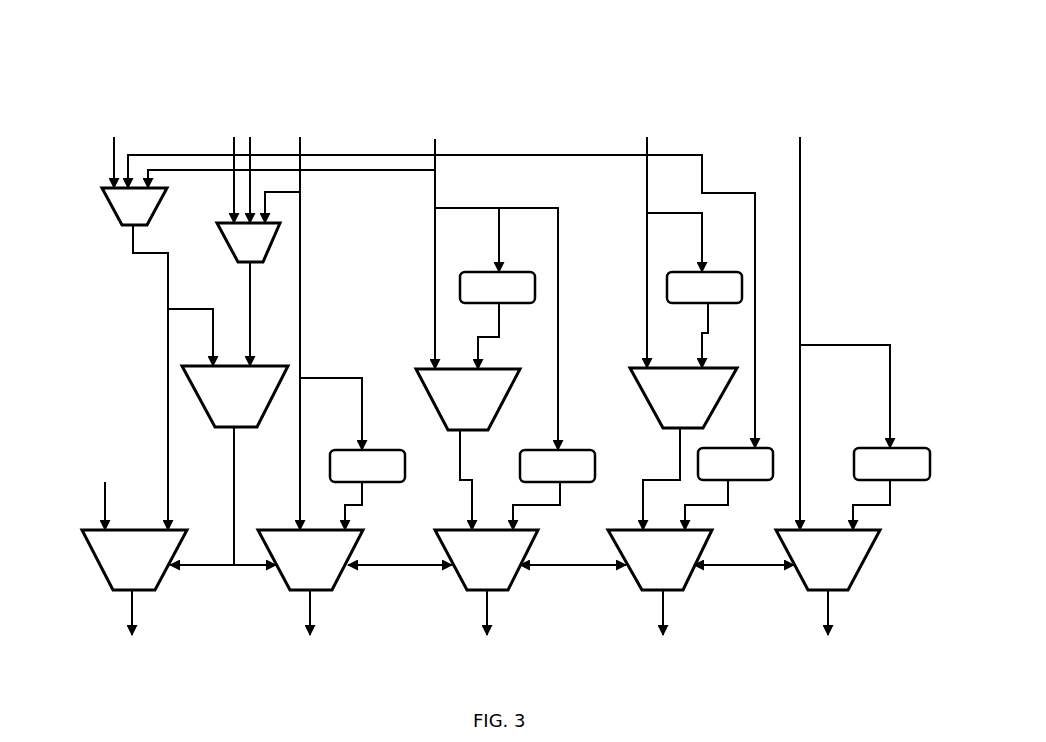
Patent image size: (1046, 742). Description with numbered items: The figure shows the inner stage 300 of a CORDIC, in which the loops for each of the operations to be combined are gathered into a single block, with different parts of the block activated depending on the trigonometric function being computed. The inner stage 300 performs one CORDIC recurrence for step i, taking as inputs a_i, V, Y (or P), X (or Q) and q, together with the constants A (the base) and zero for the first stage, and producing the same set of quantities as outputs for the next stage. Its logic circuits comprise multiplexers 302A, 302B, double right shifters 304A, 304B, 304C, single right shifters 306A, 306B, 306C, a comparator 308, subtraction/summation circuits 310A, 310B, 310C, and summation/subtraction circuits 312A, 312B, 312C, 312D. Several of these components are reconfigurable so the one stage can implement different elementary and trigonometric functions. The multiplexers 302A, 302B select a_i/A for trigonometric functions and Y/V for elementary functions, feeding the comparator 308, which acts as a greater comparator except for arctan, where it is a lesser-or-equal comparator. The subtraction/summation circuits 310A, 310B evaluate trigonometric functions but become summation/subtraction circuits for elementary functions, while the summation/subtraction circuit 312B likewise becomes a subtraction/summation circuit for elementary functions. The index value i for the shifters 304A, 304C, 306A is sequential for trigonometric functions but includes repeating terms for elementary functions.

The inner stage 300 is at (849, 126).
The multiplexer 302A is at (101, 206).
The multiplexer 302B is at (223, 246).
The double right shifter 304A is at (509, 269).
The double right shifter 304B is at (718, 268).
The double right shifter 304C is at (381, 441).
The single right shifter 306A is at (586, 441).
The single right shifter 306B is at (766, 444).
The single right shifter 306C is at (921, 441).
The comparator 308 is at (273, 359).
The subtraction/summation circuit 310A is at (507, 364).
The subtraction/summation circuit 310B is at (631, 364).
The subtraction/summation circuit 310C is at (610, 538).
The summation/subtraction circuit 312A is at (78, 541).
The summation/subtraction circuit 312B is at (279, 527).
The summation/subtraction circuit 312C is at (438, 530).
The summation/subtraction circuit 312D is at (873, 553).